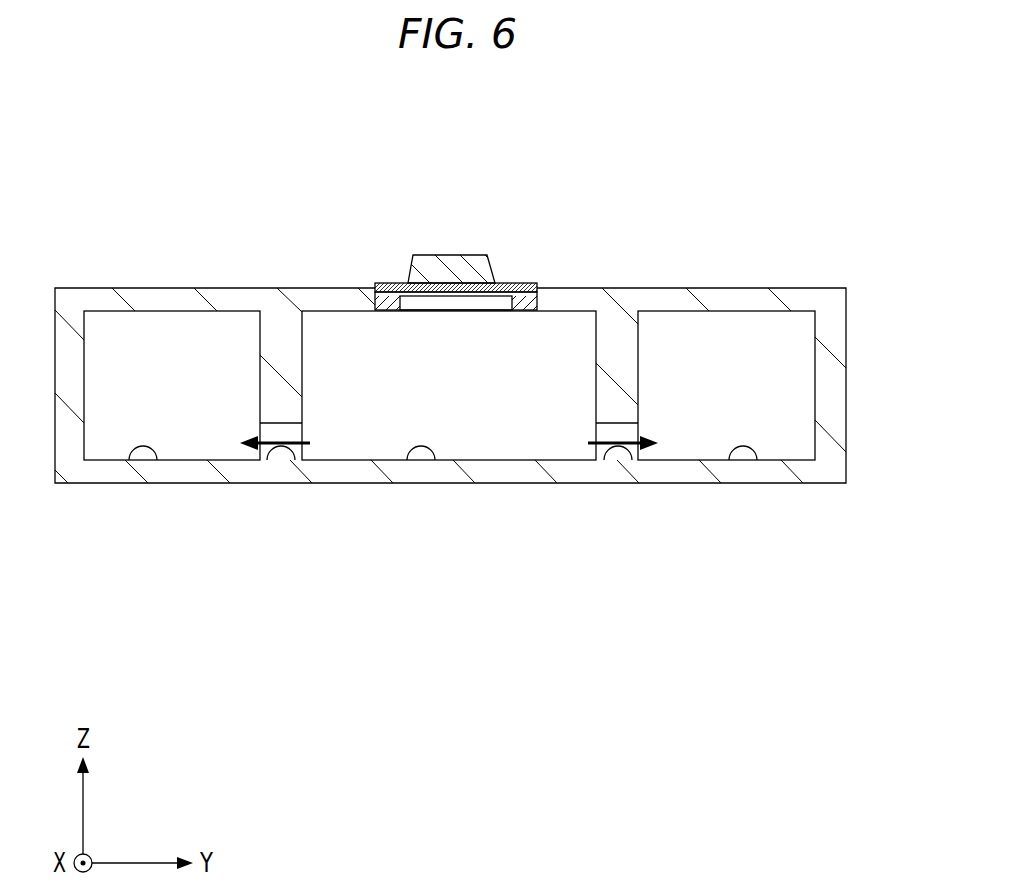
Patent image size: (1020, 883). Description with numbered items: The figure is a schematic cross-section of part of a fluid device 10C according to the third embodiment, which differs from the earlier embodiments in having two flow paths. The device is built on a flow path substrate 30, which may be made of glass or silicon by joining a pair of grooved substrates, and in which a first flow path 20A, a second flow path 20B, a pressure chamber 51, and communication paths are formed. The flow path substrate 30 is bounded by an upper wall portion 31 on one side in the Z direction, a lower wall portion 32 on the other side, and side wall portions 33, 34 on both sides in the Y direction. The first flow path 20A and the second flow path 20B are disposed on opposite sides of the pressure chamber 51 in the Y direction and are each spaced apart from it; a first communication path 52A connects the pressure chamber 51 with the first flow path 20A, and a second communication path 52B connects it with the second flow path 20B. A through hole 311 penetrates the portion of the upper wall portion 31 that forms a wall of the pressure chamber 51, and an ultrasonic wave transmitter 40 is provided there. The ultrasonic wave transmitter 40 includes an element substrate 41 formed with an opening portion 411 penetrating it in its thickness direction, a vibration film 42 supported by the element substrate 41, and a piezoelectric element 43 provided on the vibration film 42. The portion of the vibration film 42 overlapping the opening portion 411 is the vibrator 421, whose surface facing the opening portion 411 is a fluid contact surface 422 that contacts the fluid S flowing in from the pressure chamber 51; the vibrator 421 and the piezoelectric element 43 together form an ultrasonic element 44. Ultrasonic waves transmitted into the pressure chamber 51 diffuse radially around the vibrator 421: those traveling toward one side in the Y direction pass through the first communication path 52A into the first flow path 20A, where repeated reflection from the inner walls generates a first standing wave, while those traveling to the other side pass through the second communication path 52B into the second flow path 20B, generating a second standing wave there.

The fluid device 10C is at (72, 152).
The first flow path 20A is at (757, 456).
The second flow path 20B is at (155, 456).
The flow path substrate 30 is at (710, 287).
The upper wall portion 31 is at (238, 298).
The through hole 311 is at (384, 300).
The lower wall portion 32 is at (515, 472).
The side wall portion 33 is at (72, 425).
The side wall portion 34 is at (847, 390).
The ultrasonic wave transmitter 40 is at (381, 154).
The element substrate 41 is at (545, 293).
The opening portion 411 is at (503, 311).
The vibration film 42 is at (525, 283).
The vibrator 421 is at (508, 283).
The fluid contact surface 422 is at (418, 311).
The piezoelectric element 43 is at (458, 255).
The ultrasonic element 44 is at (538, 177).
The pressure chamber 51 is at (432, 456).
The first communication path 52A is at (630, 456).
The second communication path 52B is at (290, 456).
The fluid S is at (170, 330).